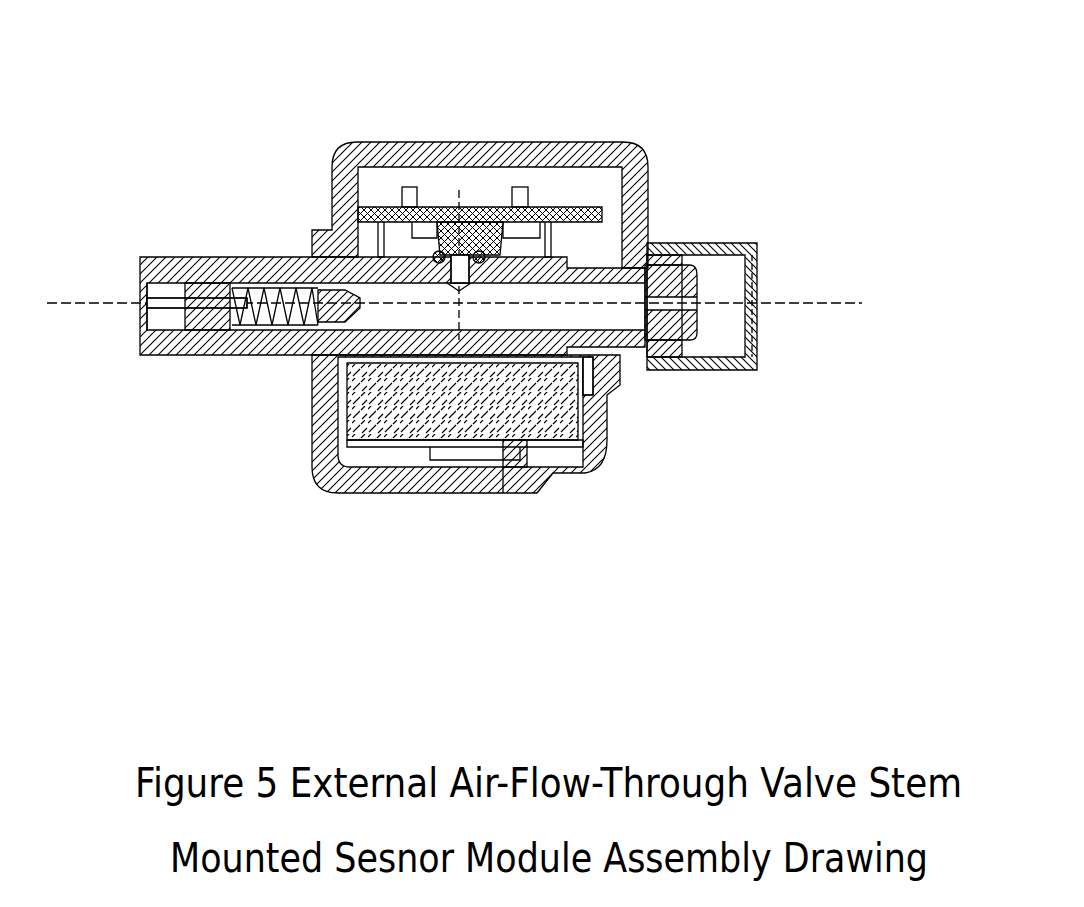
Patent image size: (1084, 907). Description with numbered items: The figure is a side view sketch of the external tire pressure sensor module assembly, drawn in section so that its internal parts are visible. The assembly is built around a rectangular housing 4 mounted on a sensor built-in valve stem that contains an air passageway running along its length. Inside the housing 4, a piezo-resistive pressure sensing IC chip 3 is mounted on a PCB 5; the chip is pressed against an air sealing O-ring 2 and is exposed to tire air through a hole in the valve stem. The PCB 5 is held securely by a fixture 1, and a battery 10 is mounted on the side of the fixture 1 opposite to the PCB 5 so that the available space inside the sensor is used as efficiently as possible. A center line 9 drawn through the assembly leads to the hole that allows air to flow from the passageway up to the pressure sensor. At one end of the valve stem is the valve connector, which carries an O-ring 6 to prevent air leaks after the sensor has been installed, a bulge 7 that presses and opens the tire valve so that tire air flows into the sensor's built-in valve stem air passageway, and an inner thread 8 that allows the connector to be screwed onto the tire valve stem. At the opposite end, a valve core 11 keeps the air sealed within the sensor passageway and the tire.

The fixture 1 is at (402, 185).
The air sealing O-ring 2 is at (440, 252).
The piezo-resistive pressure sensing IC chip 3 is at (480, 252).
The housing 4 is at (626, 150).
The PCB 5 is at (606, 207).
The O-ring 6 is at (671, 263).
The bulge 7 is at (688, 283).
The inner thread 8 is at (752, 353).
The center line 9 is at (475, 337).
The battery 10 is at (585, 445).
The valve core 11 is at (140, 287).